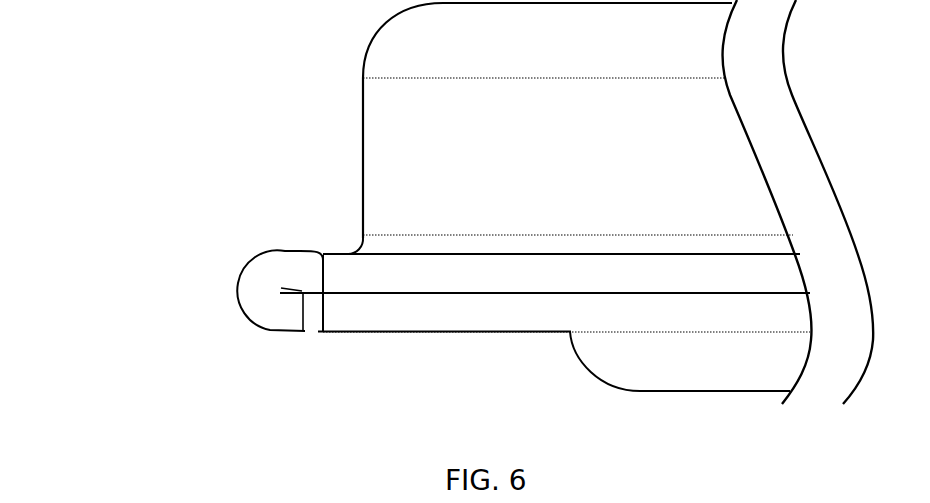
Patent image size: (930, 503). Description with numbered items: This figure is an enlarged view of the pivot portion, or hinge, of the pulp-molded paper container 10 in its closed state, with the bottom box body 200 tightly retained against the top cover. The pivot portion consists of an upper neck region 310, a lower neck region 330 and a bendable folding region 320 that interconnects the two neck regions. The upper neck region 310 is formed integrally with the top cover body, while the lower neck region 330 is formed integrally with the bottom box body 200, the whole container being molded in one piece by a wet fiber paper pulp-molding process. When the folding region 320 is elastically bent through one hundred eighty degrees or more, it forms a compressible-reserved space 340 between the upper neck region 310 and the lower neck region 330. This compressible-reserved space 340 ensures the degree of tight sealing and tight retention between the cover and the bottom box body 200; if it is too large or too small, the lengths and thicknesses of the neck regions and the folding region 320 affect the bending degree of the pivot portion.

The pulp-molded paper container 10 is at (229, 44).
The bottom box body 200 is at (541, 341).
The upper neck region 310 is at (323, 268).
The folding region 320 is at (254, 293).
The lower neck region 330 is at (318, 331).
The compressible-reserved space 340 is at (291, 293).